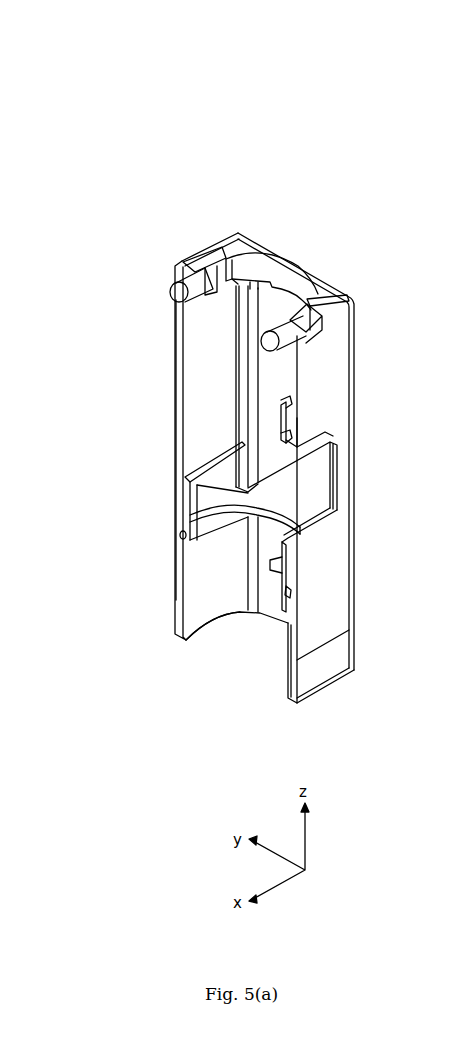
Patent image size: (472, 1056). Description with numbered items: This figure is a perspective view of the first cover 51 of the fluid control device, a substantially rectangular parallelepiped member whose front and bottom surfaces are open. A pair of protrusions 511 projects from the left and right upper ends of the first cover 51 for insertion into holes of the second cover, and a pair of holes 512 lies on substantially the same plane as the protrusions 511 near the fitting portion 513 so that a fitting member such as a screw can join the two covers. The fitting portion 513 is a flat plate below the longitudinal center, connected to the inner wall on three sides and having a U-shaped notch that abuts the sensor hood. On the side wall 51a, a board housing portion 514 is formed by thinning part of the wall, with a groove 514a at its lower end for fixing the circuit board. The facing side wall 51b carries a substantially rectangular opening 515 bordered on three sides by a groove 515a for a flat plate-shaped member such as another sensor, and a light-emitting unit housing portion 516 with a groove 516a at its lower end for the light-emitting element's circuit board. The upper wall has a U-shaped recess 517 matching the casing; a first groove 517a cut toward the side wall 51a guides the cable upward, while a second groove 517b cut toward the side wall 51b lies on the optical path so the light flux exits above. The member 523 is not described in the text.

The first cover 51 is at (336, 130).
The side wall 51a is at (238, 245).
The side wall 51b is at (287, 662).
The protrusion 511 is at (177, 282).
The hole 512 is at (177, 534).
The fitting portion 513 is at (195, 518).
The board housing portion 514 is at (206, 372).
The groove 514a is at (186, 479).
The opening 515 is at (338, 444).
The groove 515a is at (338, 498).
The light-emitting unit housing portion 516 is at (301, 362).
The groove 516a is at (298, 418).
The recess 517 is at (280, 268).
The first groove 517a is at (224, 254).
The second groove 517b is at (326, 287).
The adjacent member 523 is at (457, 580).